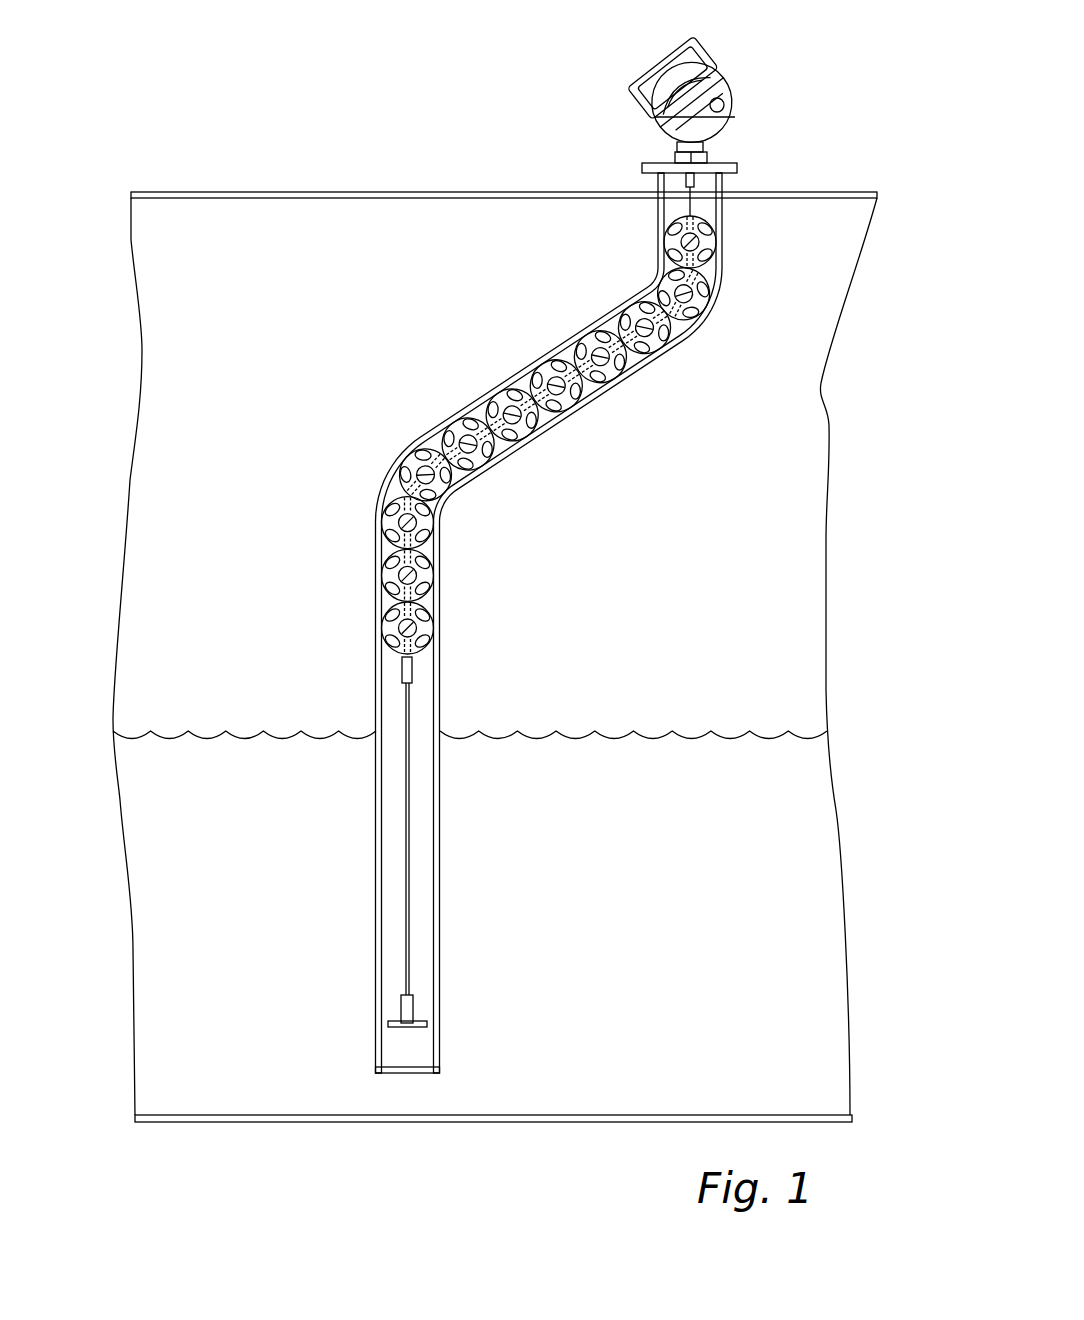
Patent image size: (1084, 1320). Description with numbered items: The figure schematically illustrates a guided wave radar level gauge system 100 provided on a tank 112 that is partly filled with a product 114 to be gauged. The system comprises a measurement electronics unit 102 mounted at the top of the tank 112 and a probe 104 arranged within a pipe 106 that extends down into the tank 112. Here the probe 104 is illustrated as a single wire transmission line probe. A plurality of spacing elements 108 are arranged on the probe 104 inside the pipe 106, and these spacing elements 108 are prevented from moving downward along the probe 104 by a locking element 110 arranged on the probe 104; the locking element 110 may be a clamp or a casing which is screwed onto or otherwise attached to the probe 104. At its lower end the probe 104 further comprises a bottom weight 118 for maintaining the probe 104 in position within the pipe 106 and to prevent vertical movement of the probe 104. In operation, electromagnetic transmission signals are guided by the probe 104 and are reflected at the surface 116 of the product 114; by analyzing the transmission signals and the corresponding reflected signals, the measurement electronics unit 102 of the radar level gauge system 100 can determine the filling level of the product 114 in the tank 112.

The guided wave radar level gauge system 100 is at (366, 90).
The measurement electronics unit 102 is at (688, 68).
The probe 104 is at (412, 808).
The pipe 106 is at (440, 930).
The spacing elements 108 is at (705, 310).
The locking element 110 is at (410, 672).
The tank 112 is at (820, 385).
The product 114 is at (607, 1058).
The surface 116 is at (565, 732).
The bottom weight 118 is at (425, 1023).